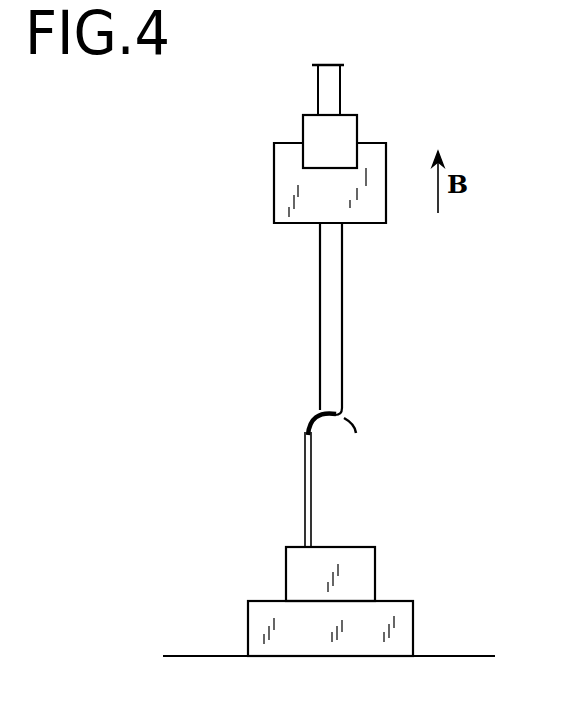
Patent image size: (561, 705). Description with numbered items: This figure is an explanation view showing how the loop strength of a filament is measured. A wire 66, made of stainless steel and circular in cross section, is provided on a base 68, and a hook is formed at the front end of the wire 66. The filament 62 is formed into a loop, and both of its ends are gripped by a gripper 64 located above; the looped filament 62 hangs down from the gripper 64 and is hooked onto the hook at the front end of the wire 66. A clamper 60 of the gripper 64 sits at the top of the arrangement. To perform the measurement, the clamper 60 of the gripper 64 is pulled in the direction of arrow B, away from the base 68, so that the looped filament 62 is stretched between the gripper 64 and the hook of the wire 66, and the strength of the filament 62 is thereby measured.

The clamper 60 is at (343, 125).
The looped filament 62 is at (342, 325).
The gripper 64 is at (285, 173).
The wire 66 is at (312, 488).
The base 68 is at (367, 570).